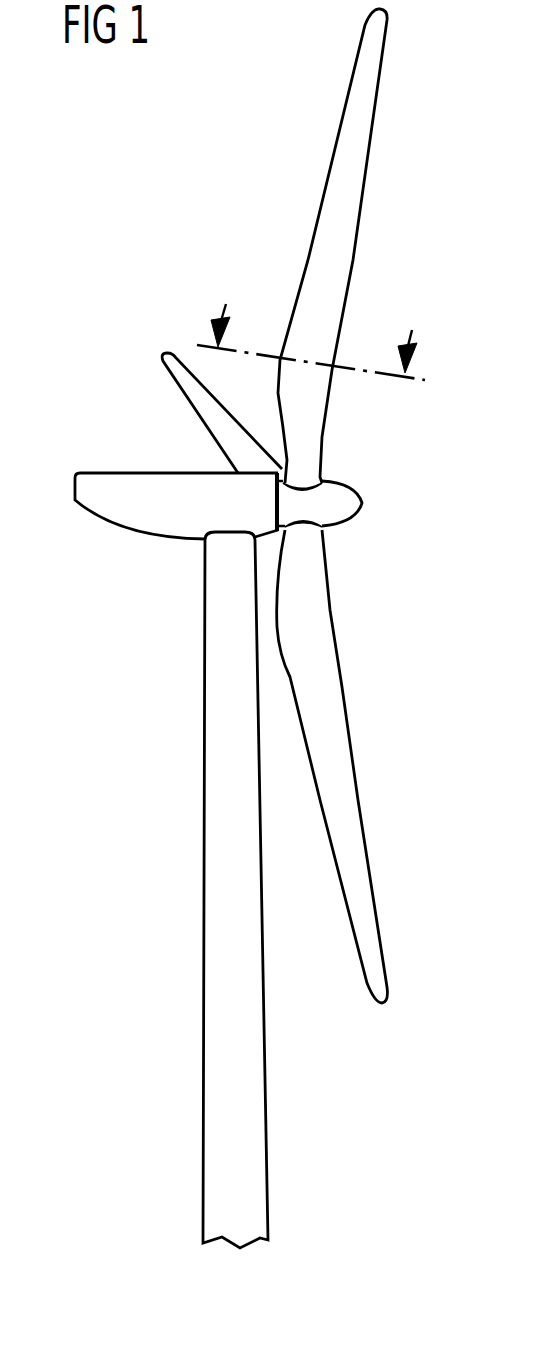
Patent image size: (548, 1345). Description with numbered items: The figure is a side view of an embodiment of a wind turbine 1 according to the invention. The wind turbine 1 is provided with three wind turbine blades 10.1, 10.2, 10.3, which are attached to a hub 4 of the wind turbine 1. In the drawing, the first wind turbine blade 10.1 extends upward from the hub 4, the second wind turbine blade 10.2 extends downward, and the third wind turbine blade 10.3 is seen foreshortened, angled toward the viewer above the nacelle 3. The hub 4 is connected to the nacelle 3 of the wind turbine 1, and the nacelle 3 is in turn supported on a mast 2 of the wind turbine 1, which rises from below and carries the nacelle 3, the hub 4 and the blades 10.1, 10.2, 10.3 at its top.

The wind turbine 1 is at (104, 295).
The mast 2 is at (218, 875).
The nacelle 3 is at (122, 471).
The hub 4 is at (353, 505).
The wind turbine blade 10.1 is at (338, 243).
The wind turbine blade 10.2 is at (328, 688).
The wind turbine blade 10.3 is at (160, 365).